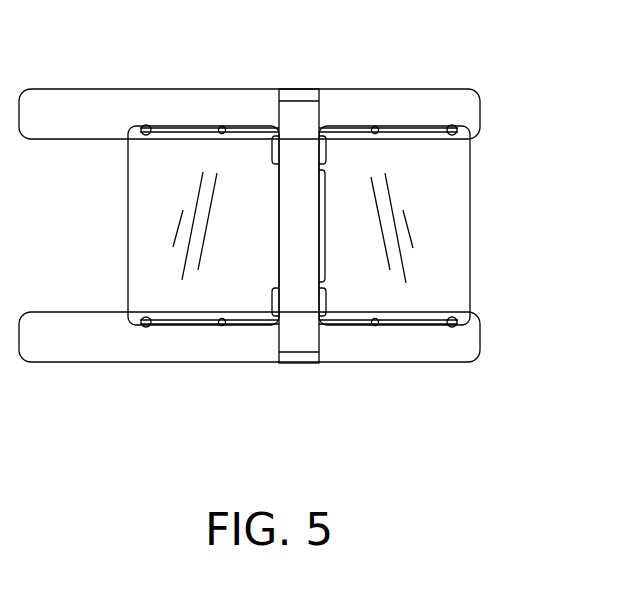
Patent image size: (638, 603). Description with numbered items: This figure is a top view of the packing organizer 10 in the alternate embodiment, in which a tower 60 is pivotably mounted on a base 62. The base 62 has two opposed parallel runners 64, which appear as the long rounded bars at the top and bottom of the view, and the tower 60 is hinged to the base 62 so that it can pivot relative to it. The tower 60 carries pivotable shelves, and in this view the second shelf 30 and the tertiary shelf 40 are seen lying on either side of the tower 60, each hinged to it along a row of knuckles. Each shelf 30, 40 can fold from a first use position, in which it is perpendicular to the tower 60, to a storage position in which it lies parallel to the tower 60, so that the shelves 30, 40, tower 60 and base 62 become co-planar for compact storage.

The foldable device assembly 10 is at (507, 73).
The second shelf 30 is at (126, 220).
The tertiary shelf 40 is at (472, 230).
The tower 60 is at (314, 229).
The base 62 is at (70, 86).
The runners 64 is at (375, 88).